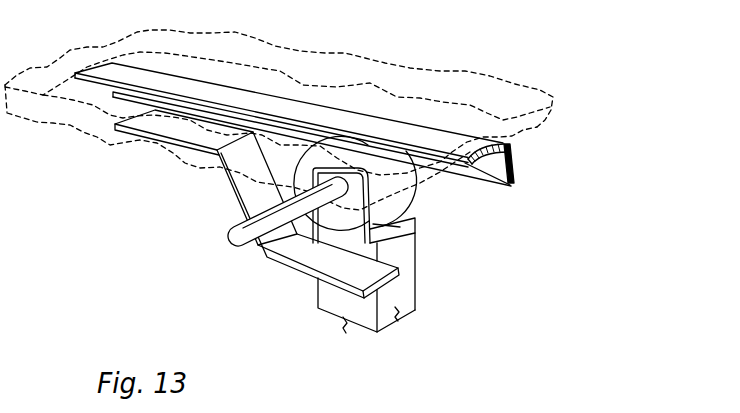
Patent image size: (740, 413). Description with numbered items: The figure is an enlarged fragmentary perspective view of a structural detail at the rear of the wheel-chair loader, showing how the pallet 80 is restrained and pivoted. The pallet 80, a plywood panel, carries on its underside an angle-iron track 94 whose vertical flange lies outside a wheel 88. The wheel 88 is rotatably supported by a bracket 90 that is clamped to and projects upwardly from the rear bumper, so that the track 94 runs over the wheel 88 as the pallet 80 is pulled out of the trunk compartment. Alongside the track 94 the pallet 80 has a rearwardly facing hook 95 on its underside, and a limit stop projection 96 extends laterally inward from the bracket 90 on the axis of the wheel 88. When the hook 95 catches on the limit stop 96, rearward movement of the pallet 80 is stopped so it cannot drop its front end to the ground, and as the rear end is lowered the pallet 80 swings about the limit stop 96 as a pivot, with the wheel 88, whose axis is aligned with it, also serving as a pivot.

The pallet 80 is at (441, 83).
The wheel 88 is at (413, 228).
The bracket 90 is at (400, 291).
The track 94 is at (514, 166).
The hook 95 is at (250, 185).
The limit stop projection 96 is at (247, 236).